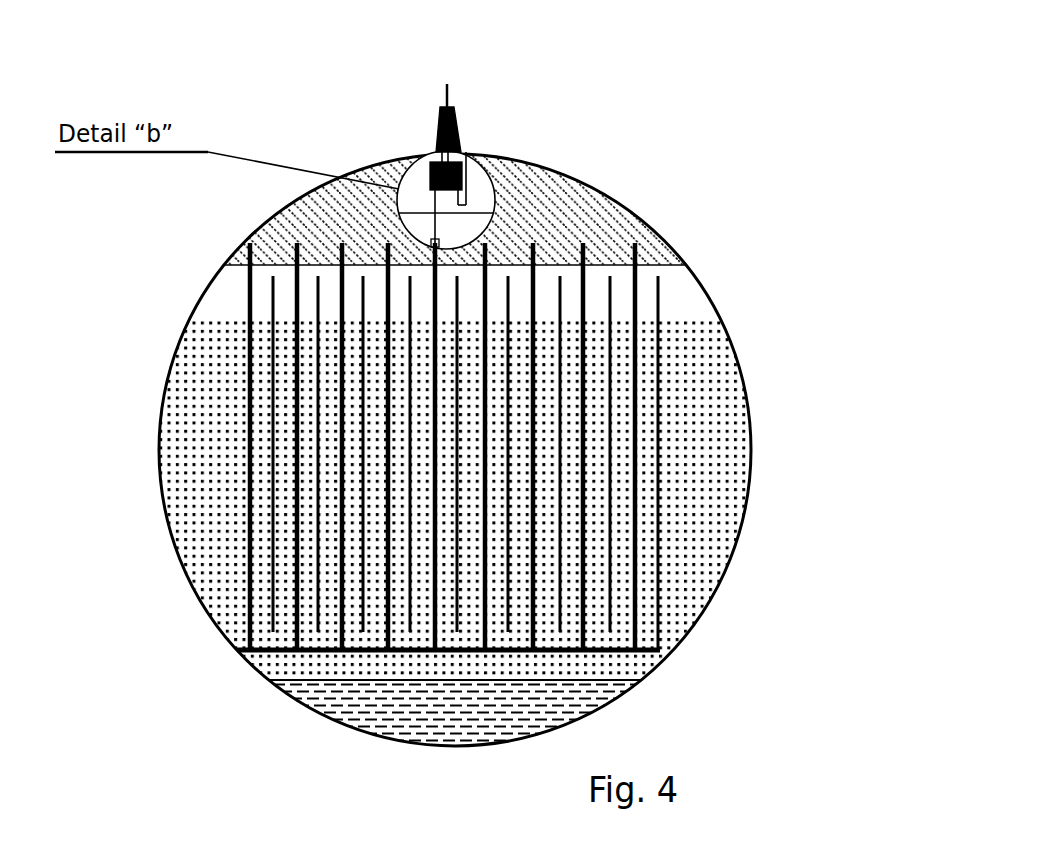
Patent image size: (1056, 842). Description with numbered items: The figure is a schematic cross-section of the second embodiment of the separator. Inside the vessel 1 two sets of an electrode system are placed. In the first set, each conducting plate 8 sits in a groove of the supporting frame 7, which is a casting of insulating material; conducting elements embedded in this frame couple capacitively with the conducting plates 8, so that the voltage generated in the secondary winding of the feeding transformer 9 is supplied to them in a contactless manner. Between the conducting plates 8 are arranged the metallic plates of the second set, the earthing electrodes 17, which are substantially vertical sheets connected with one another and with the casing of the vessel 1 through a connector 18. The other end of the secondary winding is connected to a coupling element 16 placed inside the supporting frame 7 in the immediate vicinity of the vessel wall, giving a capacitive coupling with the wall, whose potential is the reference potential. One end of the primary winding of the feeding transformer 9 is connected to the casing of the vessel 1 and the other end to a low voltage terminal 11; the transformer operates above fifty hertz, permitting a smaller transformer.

The vessel 1 is at (737, 359).
The supporting frame 7 is at (668, 247).
The conducting plate 8 is at (636, 418).
The feeding transformer 9 is at (462, 178).
The low voltage terminal 11 is at (447, 84).
The coupling element 16 is at (462, 170).
The earthing electrode 17 is at (659, 489).
The connector 18 is at (660, 655).